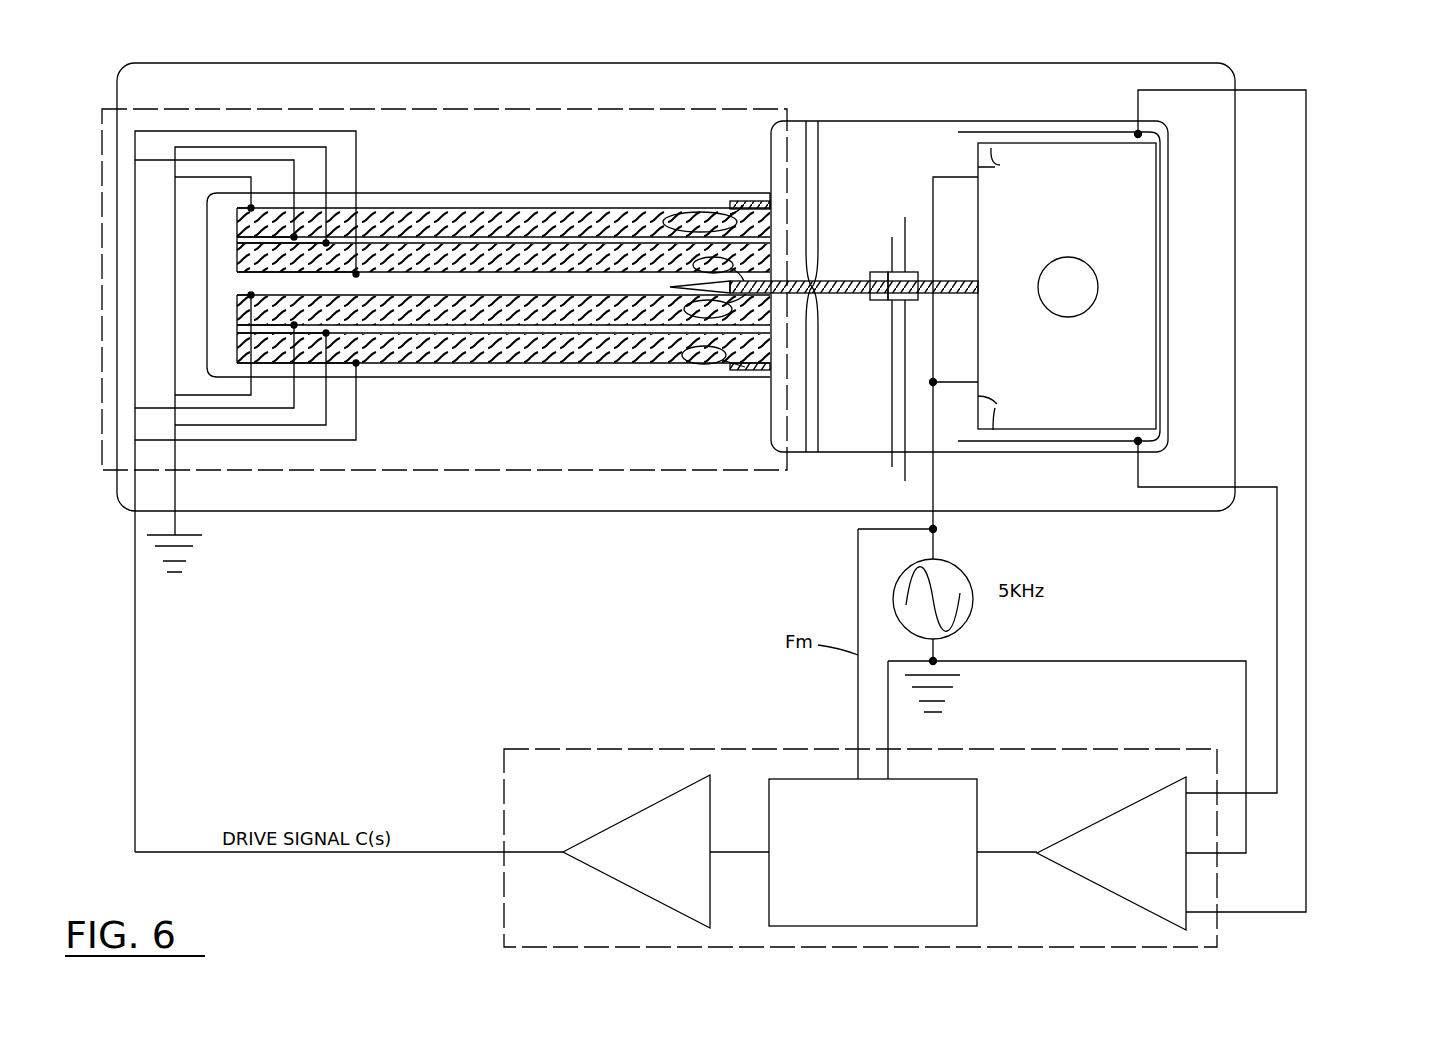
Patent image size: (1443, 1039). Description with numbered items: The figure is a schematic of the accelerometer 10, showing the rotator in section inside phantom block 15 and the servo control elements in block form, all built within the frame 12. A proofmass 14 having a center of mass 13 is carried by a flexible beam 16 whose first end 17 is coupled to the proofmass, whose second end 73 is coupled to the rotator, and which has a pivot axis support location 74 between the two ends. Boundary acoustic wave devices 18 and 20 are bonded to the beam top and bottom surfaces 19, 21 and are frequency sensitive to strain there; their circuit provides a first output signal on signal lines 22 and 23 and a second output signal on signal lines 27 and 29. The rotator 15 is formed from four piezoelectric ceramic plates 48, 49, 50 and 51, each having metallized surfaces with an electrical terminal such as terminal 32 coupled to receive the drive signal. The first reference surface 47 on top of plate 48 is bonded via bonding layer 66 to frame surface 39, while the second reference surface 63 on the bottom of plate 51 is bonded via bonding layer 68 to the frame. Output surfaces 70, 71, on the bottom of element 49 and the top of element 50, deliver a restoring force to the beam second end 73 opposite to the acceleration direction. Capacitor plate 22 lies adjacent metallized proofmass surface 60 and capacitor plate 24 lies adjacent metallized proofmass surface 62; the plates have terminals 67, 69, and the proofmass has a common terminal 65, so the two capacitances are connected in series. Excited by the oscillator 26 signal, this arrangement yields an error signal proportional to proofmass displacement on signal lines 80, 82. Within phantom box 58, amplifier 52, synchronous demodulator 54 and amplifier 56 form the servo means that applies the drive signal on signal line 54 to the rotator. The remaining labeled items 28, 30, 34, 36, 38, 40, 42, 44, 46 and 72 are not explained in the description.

The accelerometer 10 is at (1347, 147).
The frame 12 is at (843, 92).
The center of mass 13 is at (1068, 287).
The proofmass 14 is at (1057, 232).
The rotator 15 is at (594, 147).
The flexible beam 16 is at (919, 286).
The first end 17 is at (981, 287).
The boundary acoustic wave device 18 is at (917, 275).
The flexible beam top surface 19 is at (871, 274).
The boundary acoustic wave device 20 is at (918, 300).
The flexible beam bottom surface 21 is at (886, 301).
The capacitor plate 22 is at (959, 133).
The signal line 23 is at (892, 240).
The capacitor plate 24 is at (977, 441).
The oscillator 26 is at (950, 565).
The signal line 27 is at (892, 460).
The capacitor plate 28 is at (815, 170).
The signal line 29 is at (905, 478).
The flexure 30 is at (807, 318).
The electrical terminal 32 is at (248, 208).
The electrode 34 is at (237, 237).
The electrode 36 is at (236, 243).
The electrode 38 is at (236, 273).
The frame surface 39 is at (768, 200).
The electrode 40 is at (249, 295).
The electrode 42 is at (249, 325).
The electrode 44 is at (250, 333).
The electrode 46 is at (250, 363).
The first reference surface 47 is at (702, 219).
The piezoelectric ceramic element 48 is at (404, 214).
The piezoelectric ceramic element 49 is at (530, 250).
The piezoelectric ceramic element 50 is at (490, 330).
The piezoelectric ceramic element 51 is at (532, 345).
The amplifier 52 is at (656, 888).
The synchronous demodulator 54 is at (862, 909).
The amplifier 56 is at (1125, 890).
The phantom box 58 is at (556, 792).
The metallized proofmass surface 60 is at (999, 165).
The metallized proofmass surface 62 is at (999, 411).
The second reference surface 63 is at (713, 356).
The terminal 65 is at (954, 353).
The bonding layer 66 is at (729, 203).
The terminal 67 is at (1141, 133).
The bonding layer 68 is at (729, 369).
The terminal 69 is at (766, 371).
The output surface 70 is at (718, 268).
The output surface 71 is at (715, 307).
The rod tip 72 is at (687, 286).
The second end 73 is at (777, 283).
The pivot axis support location 74 is at (817, 292).
The signal line 80 is at (1273, 571).
The signal line 82 is at (1309, 573).